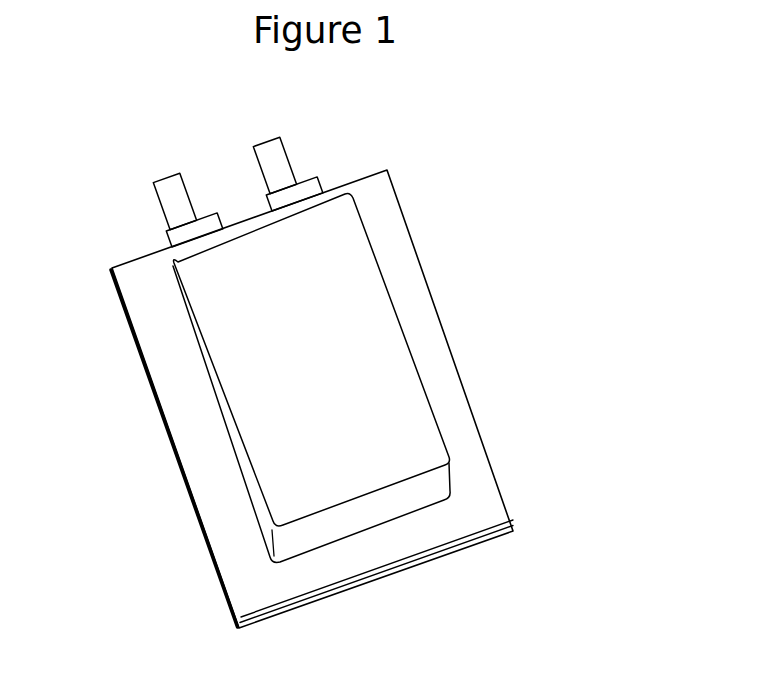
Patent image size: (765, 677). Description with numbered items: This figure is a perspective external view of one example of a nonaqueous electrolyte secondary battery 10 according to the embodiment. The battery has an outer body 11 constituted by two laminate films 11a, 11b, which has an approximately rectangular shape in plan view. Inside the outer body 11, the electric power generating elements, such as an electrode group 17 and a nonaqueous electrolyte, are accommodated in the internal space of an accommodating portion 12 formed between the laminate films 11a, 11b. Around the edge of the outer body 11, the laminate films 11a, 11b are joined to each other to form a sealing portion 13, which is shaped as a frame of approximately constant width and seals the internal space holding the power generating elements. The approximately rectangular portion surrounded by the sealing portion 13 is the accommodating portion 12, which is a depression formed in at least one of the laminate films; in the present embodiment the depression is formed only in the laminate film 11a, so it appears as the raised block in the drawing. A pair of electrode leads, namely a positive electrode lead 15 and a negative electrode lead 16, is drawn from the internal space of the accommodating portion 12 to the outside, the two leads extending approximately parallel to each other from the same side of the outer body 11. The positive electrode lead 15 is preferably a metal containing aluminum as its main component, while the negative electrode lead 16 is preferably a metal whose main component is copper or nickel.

The nonaqueous electrolyte secondary battery 10 is at (470, 112).
The outer body 11 is at (620, 457).
The laminate film 11a is at (485, 490).
The laminate film 11b is at (500, 530).
The accommodating portion 12 is at (222, 342).
The sealing portion 13 is at (190, 415).
The positive electrode lead 15 is at (173, 199).
The negative electrode lead 16 is at (290, 150).
The electrode group 17 is at (357, 318).